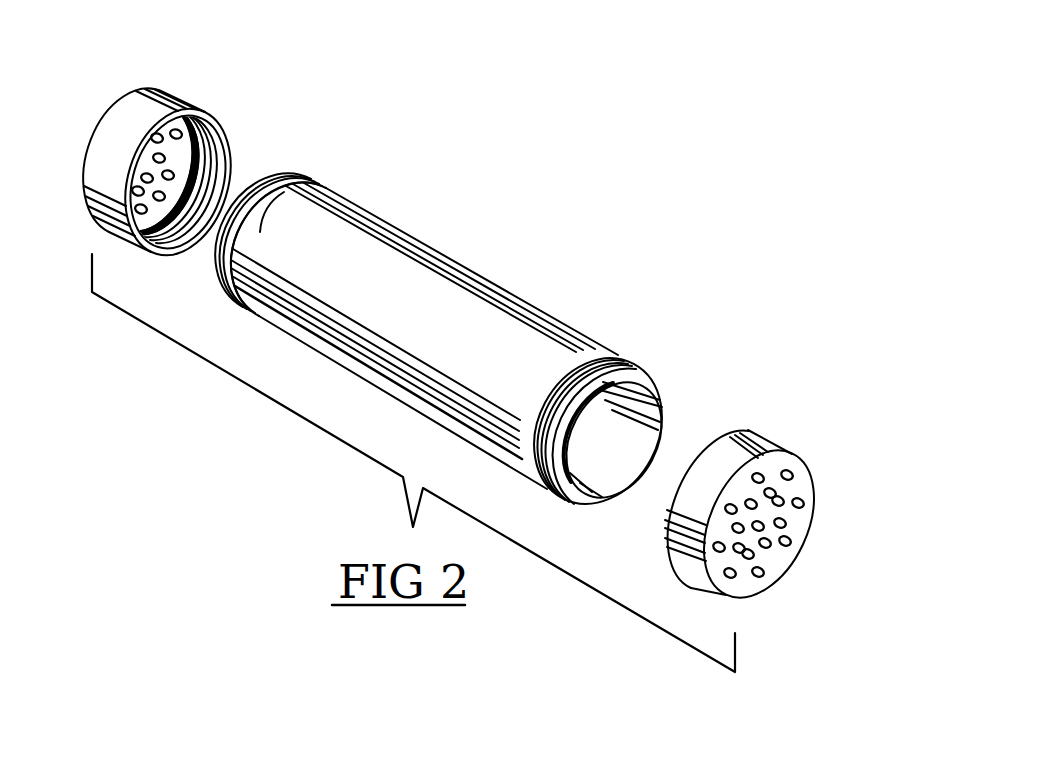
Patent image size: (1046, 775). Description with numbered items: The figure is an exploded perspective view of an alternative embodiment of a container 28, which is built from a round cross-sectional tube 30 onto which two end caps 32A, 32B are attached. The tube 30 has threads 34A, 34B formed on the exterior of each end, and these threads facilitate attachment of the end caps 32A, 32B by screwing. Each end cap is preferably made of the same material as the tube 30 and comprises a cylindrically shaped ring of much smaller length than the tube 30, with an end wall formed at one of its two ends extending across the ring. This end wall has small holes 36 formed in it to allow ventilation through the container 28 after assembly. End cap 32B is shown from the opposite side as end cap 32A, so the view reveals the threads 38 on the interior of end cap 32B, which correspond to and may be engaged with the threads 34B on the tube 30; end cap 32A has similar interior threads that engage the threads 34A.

The container 28 is at (483, 339).
The tube 30 is at (450, 308).
The end cap 32A is at (774, 484).
The end cap 32B is at (165, 161).
The threads 34A is at (613, 360).
The threads 34B is at (292, 168).
The small holes 36 is at (785, 521).
The threads 38 is at (177, 233).